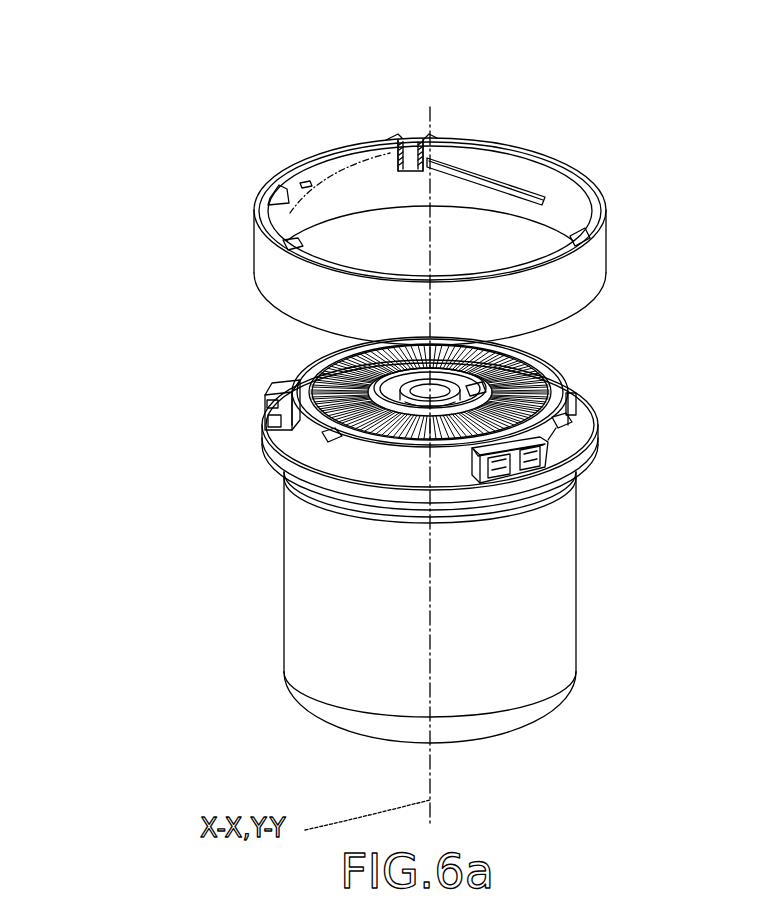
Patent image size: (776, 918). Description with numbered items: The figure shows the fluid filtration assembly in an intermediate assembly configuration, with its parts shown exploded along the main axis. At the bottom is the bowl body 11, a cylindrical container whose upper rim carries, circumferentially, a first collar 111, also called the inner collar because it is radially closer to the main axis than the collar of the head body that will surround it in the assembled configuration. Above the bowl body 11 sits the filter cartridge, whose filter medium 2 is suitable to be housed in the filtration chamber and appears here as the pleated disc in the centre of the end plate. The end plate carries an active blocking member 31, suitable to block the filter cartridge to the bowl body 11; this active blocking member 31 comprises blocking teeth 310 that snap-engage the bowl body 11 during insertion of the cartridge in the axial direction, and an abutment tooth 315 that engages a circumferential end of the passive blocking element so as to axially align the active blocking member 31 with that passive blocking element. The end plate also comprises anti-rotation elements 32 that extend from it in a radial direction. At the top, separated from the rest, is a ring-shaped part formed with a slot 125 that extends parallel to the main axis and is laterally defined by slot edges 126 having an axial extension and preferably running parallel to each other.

The filter medium 2 is at (320, 360).
The bowl body 11 is at (262, 668).
The first collar 111 is at (378, 460).
The active blocking member 31 is at (270, 378).
The blocking tooth 310 is at (262, 420).
The abutment tooth 315 is at (462, 466).
The anti-rotation element 32 is at (282, 436).
The slot 125 is at (402, 132).
The slot edges 126 is at (383, 137).